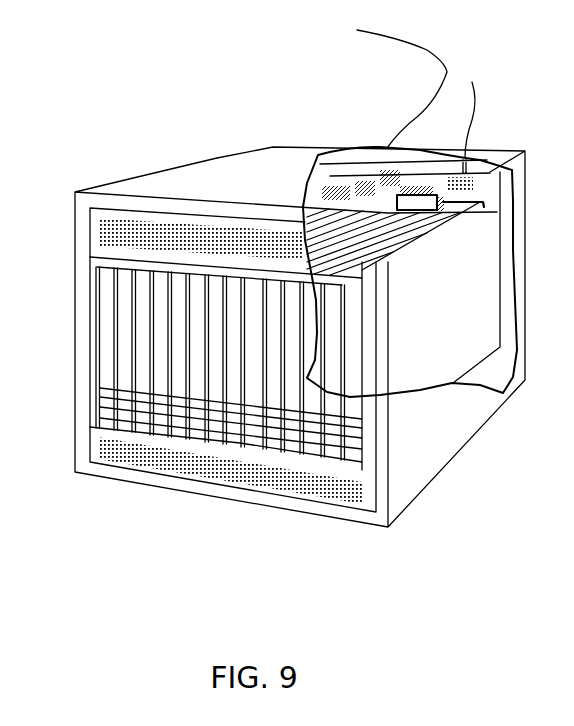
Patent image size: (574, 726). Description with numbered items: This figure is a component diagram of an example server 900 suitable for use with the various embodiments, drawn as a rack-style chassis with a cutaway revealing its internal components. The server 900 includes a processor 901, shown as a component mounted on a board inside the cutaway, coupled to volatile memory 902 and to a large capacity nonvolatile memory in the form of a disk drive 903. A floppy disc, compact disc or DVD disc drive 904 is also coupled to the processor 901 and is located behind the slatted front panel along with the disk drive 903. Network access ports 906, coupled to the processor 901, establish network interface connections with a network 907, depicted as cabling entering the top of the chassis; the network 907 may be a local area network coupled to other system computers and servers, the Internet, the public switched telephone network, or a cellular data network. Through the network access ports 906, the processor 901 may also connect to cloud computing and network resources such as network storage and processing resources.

The server 900 is at (213, 160).
The processor 901 is at (418, 200).
The volatile memory 902 is at (483, 202).
The disk drive 903 is at (138, 308).
The disc drive 904 is at (120, 335).
The network access ports 906 is at (330, 200).
The network 907 is at (450, 72).